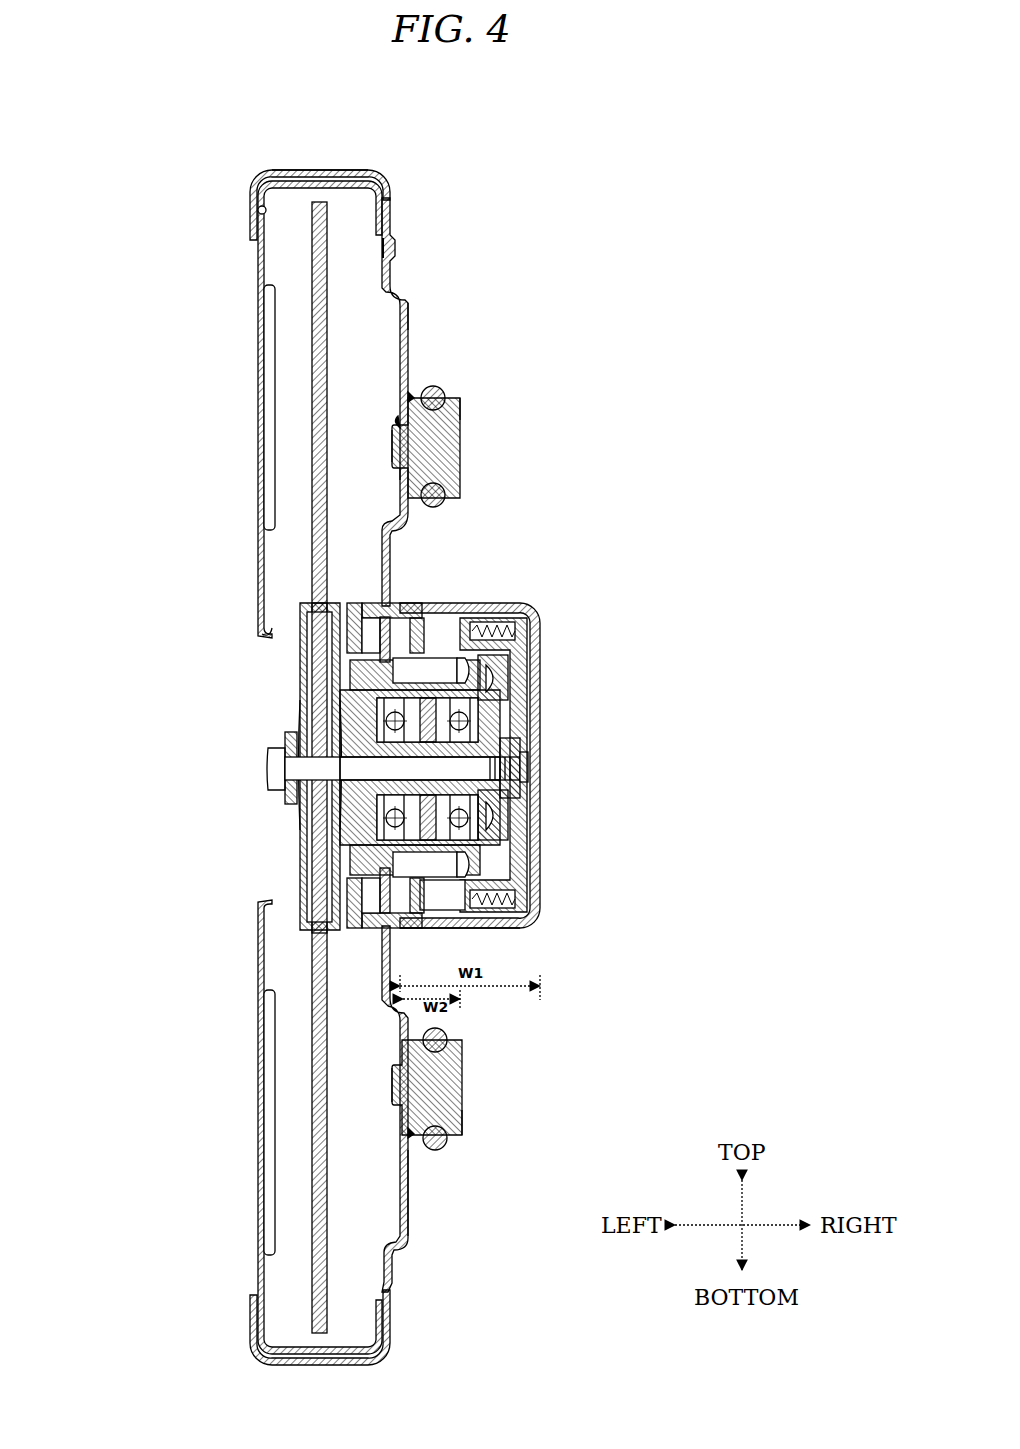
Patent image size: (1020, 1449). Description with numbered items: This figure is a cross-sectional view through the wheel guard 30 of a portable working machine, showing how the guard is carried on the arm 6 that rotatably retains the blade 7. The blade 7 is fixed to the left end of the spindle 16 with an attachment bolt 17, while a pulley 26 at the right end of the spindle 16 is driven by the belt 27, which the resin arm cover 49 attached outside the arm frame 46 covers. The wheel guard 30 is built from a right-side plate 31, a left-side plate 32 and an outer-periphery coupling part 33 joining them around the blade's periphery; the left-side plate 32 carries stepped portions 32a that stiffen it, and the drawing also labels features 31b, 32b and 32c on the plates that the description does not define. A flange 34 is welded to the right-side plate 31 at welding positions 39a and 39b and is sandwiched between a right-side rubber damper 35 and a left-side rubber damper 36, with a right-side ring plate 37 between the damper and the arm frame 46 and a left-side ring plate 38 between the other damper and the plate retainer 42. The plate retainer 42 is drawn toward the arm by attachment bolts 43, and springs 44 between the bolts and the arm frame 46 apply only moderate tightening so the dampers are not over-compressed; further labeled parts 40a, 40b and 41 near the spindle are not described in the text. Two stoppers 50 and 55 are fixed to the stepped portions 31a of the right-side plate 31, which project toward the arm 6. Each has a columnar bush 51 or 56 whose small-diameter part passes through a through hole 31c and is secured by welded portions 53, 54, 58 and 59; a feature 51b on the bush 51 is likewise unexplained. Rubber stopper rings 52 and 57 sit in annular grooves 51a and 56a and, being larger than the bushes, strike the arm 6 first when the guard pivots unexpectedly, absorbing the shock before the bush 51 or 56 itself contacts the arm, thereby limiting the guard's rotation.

The wheel guard 30 is at (133, 187).
The blade 7 is at (310, 1105).
The right-side plate 31 is at (395, 268).
The stepped portions 31a is at (413, 316).
The housing notch 31b is at (396, 246).
The through holes 31c is at (398, 476).
The left-side plate 32 is at (257, 412).
The stepped portions 32a is at (272, 360).
The cover hook 32b is at (258, 640).
The cover engaging portion 32c is at (268, 214).
The outer-periphery coupling part 33 is at (320, 168).
The flange 34 is at (376, 604).
The right-side rubber damper 35 is at (406, 604).
The left-side rubber damper 36 is at (371, 604).
The right-side ring plate 37 is at (412, 604).
The left-side ring plate 38 is at (360, 604).
The welding position 39a is at (378, 940).
The welding position 39b is at (392, 930).
The nut 40a is at (522, 750).
The threaded portion 40b is at (528, 777).
The hub body 41 is at (522, 806).
The plate retainer 42 is at (338, 888).
The attachment bolts 43 is at (535, 880).
The springs 44 is at (470, 930).
The arm frame 46 is at (460, 606).
The arm cover 49 is at (530, 666).
The pulley 26 is at (530, 700).
The belt 27 is at (530, 928).
The arm 6 is at (545, 630).
The spindle 16 is at (300, 822).
The attachment bolt 17 is at (266, 768).
The stopper 50 is at (457, 422).
The bush 51 is at (462, 448).
The annular groove 51a is at (462, 411).
The holder protrusion 51b is at (391, 445).
The stopper ring 52 is at (441, 390).
The welded portion 53 is at (396, 418).
The welded portion 54 is at (413, 393).
The stopper 55 is at (473, 1121).
The bush 56 is at (463, 1096).
The annular groove 56a is at (464, 1125).
The stopper ring 57 is at (446, 1146).
The welded portion 58 is at (396, 1112).
The welded portion 59 is at (420, 1150).